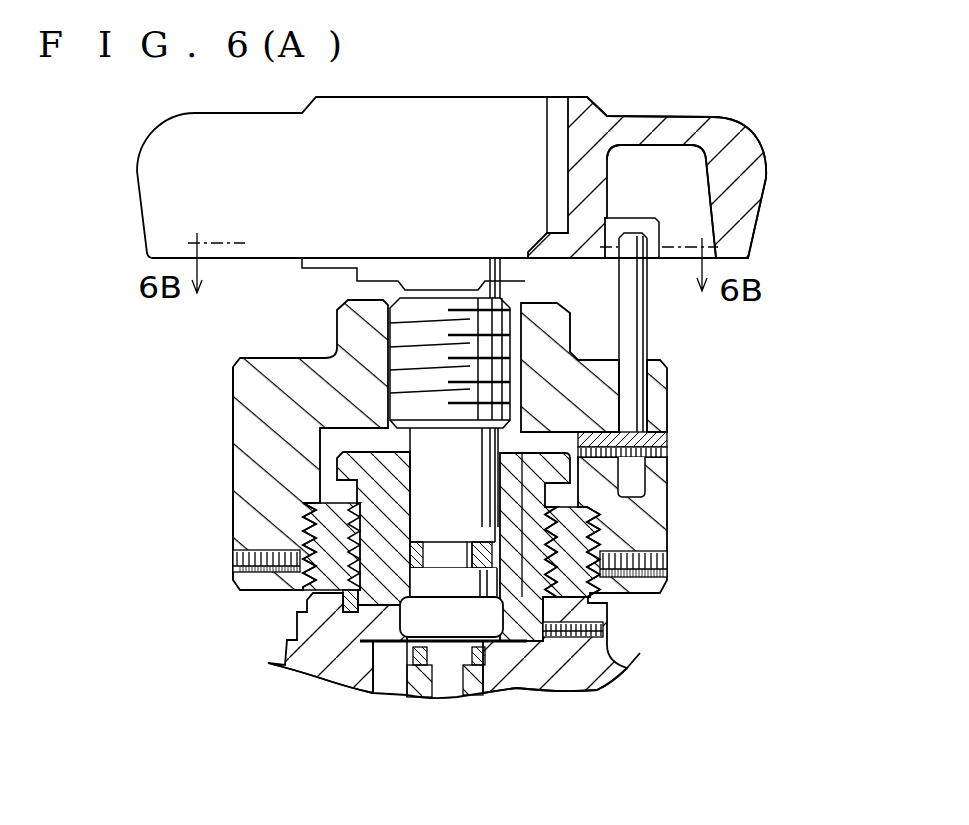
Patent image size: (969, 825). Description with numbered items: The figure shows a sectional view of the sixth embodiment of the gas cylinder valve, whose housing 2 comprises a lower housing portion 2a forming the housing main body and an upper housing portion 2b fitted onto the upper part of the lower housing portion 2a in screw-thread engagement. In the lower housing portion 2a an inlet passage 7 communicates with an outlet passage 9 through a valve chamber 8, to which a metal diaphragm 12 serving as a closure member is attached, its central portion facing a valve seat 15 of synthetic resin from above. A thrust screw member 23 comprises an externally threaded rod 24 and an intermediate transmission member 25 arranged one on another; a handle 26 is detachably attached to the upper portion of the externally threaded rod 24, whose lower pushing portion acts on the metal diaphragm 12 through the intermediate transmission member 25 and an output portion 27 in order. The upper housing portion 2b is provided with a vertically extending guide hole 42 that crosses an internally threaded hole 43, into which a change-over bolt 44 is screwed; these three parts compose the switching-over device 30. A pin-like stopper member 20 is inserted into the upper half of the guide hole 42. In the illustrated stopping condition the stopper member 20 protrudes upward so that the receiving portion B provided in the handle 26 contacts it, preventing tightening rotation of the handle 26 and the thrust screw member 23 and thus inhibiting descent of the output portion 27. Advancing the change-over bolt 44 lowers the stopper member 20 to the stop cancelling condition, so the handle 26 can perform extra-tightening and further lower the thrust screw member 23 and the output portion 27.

The handle 26 is at (757, 141).
The receiving portion B is at (620, 217).
The stopper member 20 is at (664, 338).
The externally threaded rod 24 is at (443, 305).
The housing 2 is at (166, 513).
The upper housing portion 2b is at (247, 535).
The lower housing portion 2a is at (276, 640).
The thrust screw member 23 is at (372, 401).
The switching-over device 30 is at (603, 396).
The intermediate transmission member 25 is at (475, 517).
The output portion 27 is at (452, 632).
The valve chamber 8 is at (338, 664).
The outlet passage 9 is at (387, 678).
The inlet passage 7 is at (447, 682).
The valve seat 15 is at (473, 666).
The metal diaphragm 12 is at (485, 650).
The change-over bolt 44 is at (653, 428).
The internally threaded hole 43 is at (663, 452).
The guide hole 42 is at (640, 478).